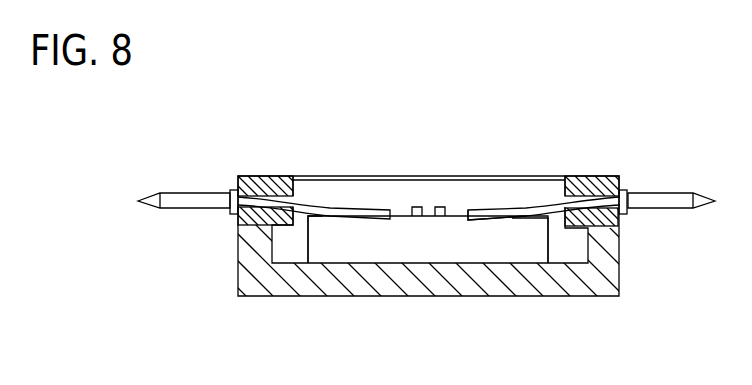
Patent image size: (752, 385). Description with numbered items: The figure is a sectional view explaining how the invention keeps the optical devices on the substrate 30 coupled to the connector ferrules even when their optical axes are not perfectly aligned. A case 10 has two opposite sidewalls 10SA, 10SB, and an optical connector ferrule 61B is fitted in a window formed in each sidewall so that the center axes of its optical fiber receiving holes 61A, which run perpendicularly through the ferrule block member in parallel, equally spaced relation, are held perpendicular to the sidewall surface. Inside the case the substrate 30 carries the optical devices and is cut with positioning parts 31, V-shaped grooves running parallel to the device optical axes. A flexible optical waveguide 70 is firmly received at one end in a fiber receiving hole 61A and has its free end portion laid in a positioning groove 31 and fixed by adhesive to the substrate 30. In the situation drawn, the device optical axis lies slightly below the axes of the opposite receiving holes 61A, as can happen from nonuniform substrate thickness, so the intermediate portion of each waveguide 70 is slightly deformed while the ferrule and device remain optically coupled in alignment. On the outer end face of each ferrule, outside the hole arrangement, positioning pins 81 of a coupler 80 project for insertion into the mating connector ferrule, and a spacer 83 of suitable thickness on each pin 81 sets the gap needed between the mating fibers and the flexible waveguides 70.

The case 10 is at (432, 297).
The sidewall 10SA is at (547, 250).
The sidewall 10SB is at (277, 250).
The substrate 30 is at (355, 250).
The positioning parts 31 is at (543, 203).
The flexible optical waveguide 70 is at (546, 200).
The optical fiber receiving hole 61A is at (252, 185).
The optical connector ferrule 61B is at (238, 222).
The coupler 80 is at (426, 160).
The positioning pin 81 is at (171, 193).
The spacer 83 is at (231, 191).